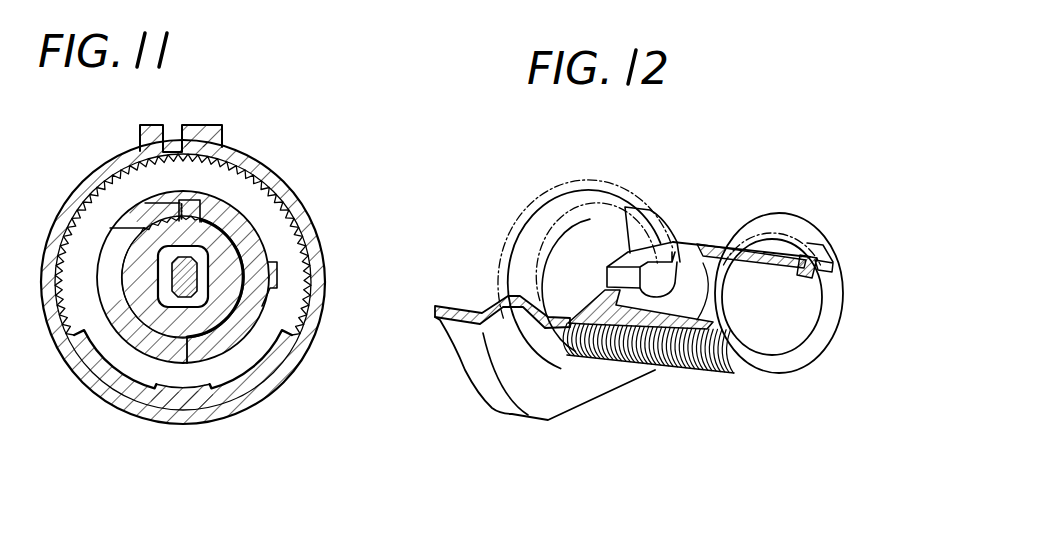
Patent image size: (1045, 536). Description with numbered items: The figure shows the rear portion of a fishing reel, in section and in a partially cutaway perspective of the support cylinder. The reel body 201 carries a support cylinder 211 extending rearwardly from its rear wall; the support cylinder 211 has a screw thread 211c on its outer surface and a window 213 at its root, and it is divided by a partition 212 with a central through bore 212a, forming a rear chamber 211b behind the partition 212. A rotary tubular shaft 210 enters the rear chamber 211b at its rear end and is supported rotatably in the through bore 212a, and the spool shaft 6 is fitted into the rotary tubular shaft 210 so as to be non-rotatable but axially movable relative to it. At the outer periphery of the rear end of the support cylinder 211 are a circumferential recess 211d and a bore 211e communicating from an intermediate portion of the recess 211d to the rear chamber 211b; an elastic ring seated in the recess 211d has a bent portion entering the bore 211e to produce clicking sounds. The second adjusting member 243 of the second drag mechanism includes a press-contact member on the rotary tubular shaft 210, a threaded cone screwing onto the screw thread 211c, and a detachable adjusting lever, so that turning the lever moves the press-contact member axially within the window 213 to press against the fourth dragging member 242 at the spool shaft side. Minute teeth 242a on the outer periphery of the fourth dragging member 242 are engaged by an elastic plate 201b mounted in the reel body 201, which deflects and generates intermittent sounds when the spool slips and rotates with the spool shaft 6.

In FIG. 11, the spool shaft 6 is at (167, 298).
In FIG. 12, the reel body 201 is at (462, 303).
In FIG. 11, the elastic plate 201b is at (207, 192).
In FIG. 11, the rotary tubular shaft 210 is at (214, 325).
In FIG. 11, the support cylinder 211 is at (265, 272).
In FIG. 12, the support cylinder 211 is at (733, 357).
In FIG. 12, the rear chamber 211b is at (657, 367).
In FIG. 12, the screw thread 211c is at (688, 367).
In FIG. 12, the recess 211d is at (626, 207).
In FIG. 12, the bore 211e is at (818, 285).
In FIG. 12, the partition 212 is at (622, 363).
In FIG. 12, the central through bore 212a is at (655, 281).
In FIG. 12, the window 213 is at (552, 322).
In FIG. 11, the fourth dragging member 242 is at (223, 243).
In FIG. 11, the minute teeth 242a is at (205, 222).
In FIG. 11, the second adjusting member 243 is at (243, 143).